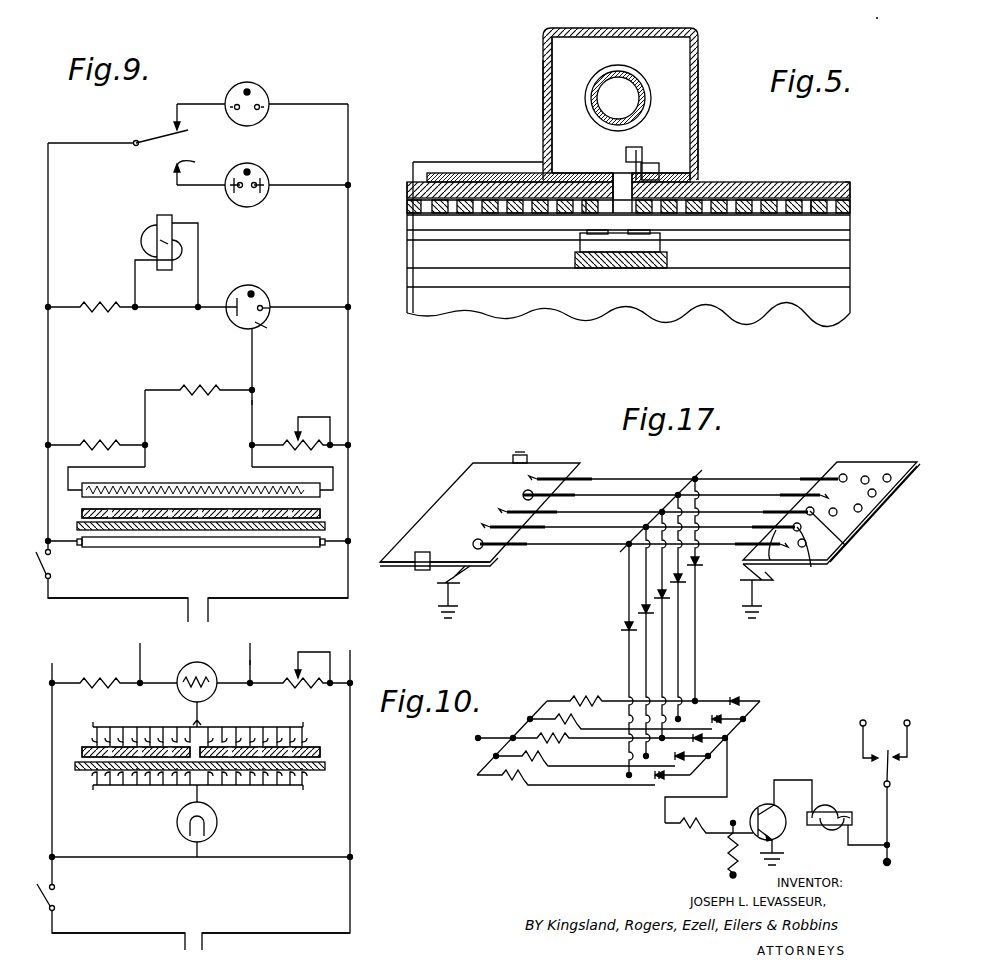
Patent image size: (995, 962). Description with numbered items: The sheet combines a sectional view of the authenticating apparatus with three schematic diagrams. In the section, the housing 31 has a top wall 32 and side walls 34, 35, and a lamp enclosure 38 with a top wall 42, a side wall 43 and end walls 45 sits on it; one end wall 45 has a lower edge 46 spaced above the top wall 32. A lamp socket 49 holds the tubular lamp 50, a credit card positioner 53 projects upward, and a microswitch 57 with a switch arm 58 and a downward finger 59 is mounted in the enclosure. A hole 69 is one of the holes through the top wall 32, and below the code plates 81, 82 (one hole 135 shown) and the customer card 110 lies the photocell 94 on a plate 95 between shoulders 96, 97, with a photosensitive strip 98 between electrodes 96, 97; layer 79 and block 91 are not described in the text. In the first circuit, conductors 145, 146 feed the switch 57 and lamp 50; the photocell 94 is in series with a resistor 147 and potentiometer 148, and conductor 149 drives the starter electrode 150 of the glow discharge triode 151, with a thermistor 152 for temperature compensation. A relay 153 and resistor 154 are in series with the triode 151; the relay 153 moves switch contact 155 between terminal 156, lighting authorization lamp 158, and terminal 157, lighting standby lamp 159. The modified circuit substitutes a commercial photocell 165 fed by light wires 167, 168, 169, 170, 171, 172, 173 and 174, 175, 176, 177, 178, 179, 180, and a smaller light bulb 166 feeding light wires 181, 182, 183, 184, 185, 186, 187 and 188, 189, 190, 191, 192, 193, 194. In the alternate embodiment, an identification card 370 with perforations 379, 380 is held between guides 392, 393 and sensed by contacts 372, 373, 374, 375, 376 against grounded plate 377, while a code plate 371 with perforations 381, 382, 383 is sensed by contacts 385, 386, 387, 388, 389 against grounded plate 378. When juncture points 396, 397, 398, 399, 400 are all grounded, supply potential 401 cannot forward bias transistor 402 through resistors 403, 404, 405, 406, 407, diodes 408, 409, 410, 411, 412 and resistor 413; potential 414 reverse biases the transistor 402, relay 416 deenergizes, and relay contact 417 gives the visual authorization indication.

In FIG. 5, the housing 31 is at (836, 182).
In FIG. 5, the top wall 32 is at (794, 182).
In FIG. 5, the side wall 34 is at (815, 310).
In FIG. 5, the side wall 35 is at (886, 11).
In FIG. 5, the lamp enclosure 38 is at (700, 60).
In FIG. 5, the top wall 42 is at (662, 28).
In FIG. 5, the side wall 43 is at (565, 58).
In FIG. 5, the end wall 45 is at (545, 81).
In FIG. 5, the lower edge 46 is at (545, 200).
In FIG. 5, the lamp socket 49 is at (623, 66).
In FIG. 9, the tubular lamp 50 is at (222, 548).
In FIG. 5, the tubular lamp 50 is at (602, 74).
In FIG. 5, the credit card positioner 53 is at (476, 162).
In FIG. 9, the microswitch 57 is at (60, 565).
In FIG. 10, the microswitch 57 is at (55, 888).
In FIG. 5, the microswitch 57 is at (643, 158).
In FIG. 5, the switch arm 58 is at (644, 147).
In FIG. 5, the finger 59 is at (660, 169).
In FIG. 5, the hole 69 is at (617, 172).
In FIG. 5, the layer 79 is at (835, 224).
In FIG. 9, the code plate 81 is at (82, 513).
In FIG. 10, the code plate 81 is at (82, 752).
In FIG. 9, the code plate 82 is at (322, 512).
In FIG. 10, the code plate 82 is at (322, 752).
In FIG. 5, the code plate 82 is at (845, 204).
In FIG. 5, the conductor block 91 is at (811, 214).
In FIG. 9, the photocell 94 is at (158, 482).
In FIG. 5, the photocell 94 is at (612, 240).
In FIG. 5, the plate 95 is at (655, 272).
In FIG. 5, the shoulder / electrode 96 is at (835, 277).
In FIG. 5, the shoulder / electrode 97 is at (575, 270).
In FIG. 5, the strip of photosensitive material 98 is at (638, 236).
In FIG. 9, the customer card 110 is at (328, 523).
In FIG. 10, the customer card 110 is at (328, 766).
In FIG. 5, the customer card 110 is at (443, 173).
In FIG. 5, the hole 135 is at (674, 216).
In FIG. 9, the conductor 145 is at (118, 598).
In FIG. 10, the conductor 145 is at (118, 933).
In FIG. 9, the conductor 146 is at (256, 598).
In FIG. 10, the conductor 146 is at (259, 933).
In FIG. 9, the resistor 147 is at (105, 442).
In FIG. 10, the resistor 147 is at (92, 678).
In FIG. 9, the potentiometer 148 is at (297, 432).
In FIG. 10, the potentiometer 148 is at (298, 663).
In FIG. 9, the conductor 149 is at (257, 406).
In FIG. 10, the conductor 149 is at (250, 665).
In FIG. 9, the starter electrode 150 is at (263, 321).
In FIG. 9, the glow discharge triode 151 is at (260, 290).
In FIG. 9, the thermistor 152 is at (198, 384).
In FIG. 9, the relay 153 is at (172, 245).
In FIG. 9, the resistor 154 is at (108, 296).
In FIG. 9, the switch contact 155 is at (147, 128).
In FIG. 9, the contact terminal 156 is at (190, 131).
In FIG. 9, the contact terminal 157 is at (202, 170).
In FIG. 9, the authorization indicator lamp 158 is at (270, 84).
In FIG. 9, the standby indicator lamp 159 is at (262, 174).
In FIG. 10, the photocell 165 is at (206, 664).
In FIG. 10, the light bulb 166 is at (197, 860).
In FIG. 10, the light wire 167 is at (93, 735).
In FIG. 10, the light wire 168 is at (105, 740).
In FIG. 10, the light wire 169 is at (117, 738).
In FIG. 10, the light wire 170 is at (125, 740).
In FIG. 10, the light wire 171 is at (141, 738).
In FIG. 10, the light wire 172 is at (150, 740).
In FIG. 10, the light wire 173 is at (165, 739).
In FIG. 10, the light wire 174 is at (208, 740).
In FIG. 10, the light wire 175 is at (236, 740).
In FIG. 10, the light wire 176 is at (250, 740).
In FIG. 10, the light wire 177 is at (263, 740).
In FIG. 10, the light wire 178 is at (278, 740).
In FIG. 10, the light wire 179 is at (292, 741).
In FIG. 10, the light wire 180 is at (303, 741).
In FIG. 10, the light wire 181 is at (93, 784).
In FIG. 10, the light wire 182 is at (102, 786).
In FIG. 10, the light wire 183 is at (114, 786).
In FIG. 10, the light wire 184 is at (140, 786).
In FIG. 10, the light wire 185 is at (152, 786).
In FIG. 10, the light wire 186 is at (166, 786).
In FIG. 10, the light wire 187 is at (181, 786).
In FIG. 10, the light wire 188 is at (218, 786).
In FIG. 10, the light wire 189 is at (234, 786).
In FIG. 10, the light wire 190 is at (248, 786).
In FIG. 10, the light wire 191 is at (262, 786).
In FIG. 10, the light wire 192 is at (278, 786).
In FIG. 10, the light wire 193 is at (292, 786).
In FIG. 10, the light wire 194 is at (305, 783).
In FIG. 17, the identification card 370 is at (448, 470).
In FIG. 17, the code plate 371 is at (866, 462).
In FIG. 17, the contact 372 is at (578, 478).
In FIG. 17, the contact 373 is at (549, 494).
In FIG. 17, the contact 374 is at (557, 515).
In FIG. 17, the contact 375 is at (531, 530).
In FIG. 17, the contact 376 is at (518, 550).
In FIG. 17, the grounded plate 377 is at (460, 590).
In FIG. 17, the grounded plate 378 is at (774, 578).
In FIG. 17, the perforation 379 is at (528, 495).
In FIG. 17, the perforation 380 is at (475, 540).
In FIG. 17, the perforation 381 is at (864, 478).
In FIG. 17, the perforation 382 is at (844, 546).
In FIG. 17, the perforation 383 is at (823, 548).
In FIG. 17, the contact 385 is at (812, 478).
In FIG. 17, the contact 386 is at (790, 493).
In FIG. 17, the contact 387 is at (768, 510).
In FIG. 17, the contact 388 is at (790, 532).
In FIG. 17, the contact 389 is at (750, 548).
In FIG. 17, the guide 392 is at (520, 454).
In FIG. 17, the guide 393 is at (418, 572).
In FIG. 17, the juncture point 396 is at (695, 478).
In FIG. 17, the juncture point 397 is at (666, 491).
In FIG. 17, the juncture point 398 is at (629, 526).
In FIG. 17, the juncture point 399 is at (644, 528).
In FIG. 17, the juncture point 400 is at (627, 545).
In FIG. 17, the supply potential 401 is at (478, 738).
In FIG. 17, the transistor 402 is at (764, 805).
In FIG. 17, the resistor 403 is at (588, 700).
In FIG. 17, the resistor 404 is at (562, 718).
In FIG. 17, the resistor 405 is at (542, 736).
In FIG. 17, the resistor 406 is at (545, 756).
In FIG. 17, the resistor 407 is at (520, 778).
In FIG. 17, the diode 408 is at (740, 697).
In FIG. 17, the diode 409 is at (716, 714).
In FIG. 17, the diode 410 is at (714, 752).
In FIG. 17, the diode 411 is at (680, 756).
In FIG. 17, the diode 412 is at (660, 784).
In FIG. 17, the resistor 413 is at (704, 835).
In FIG. 17, the potential 414 is at (730, 876).
In FIG. 17, the relay 416 is at (818, 812).
In FIG. 17, the relay contact 417 is at (886, 747).